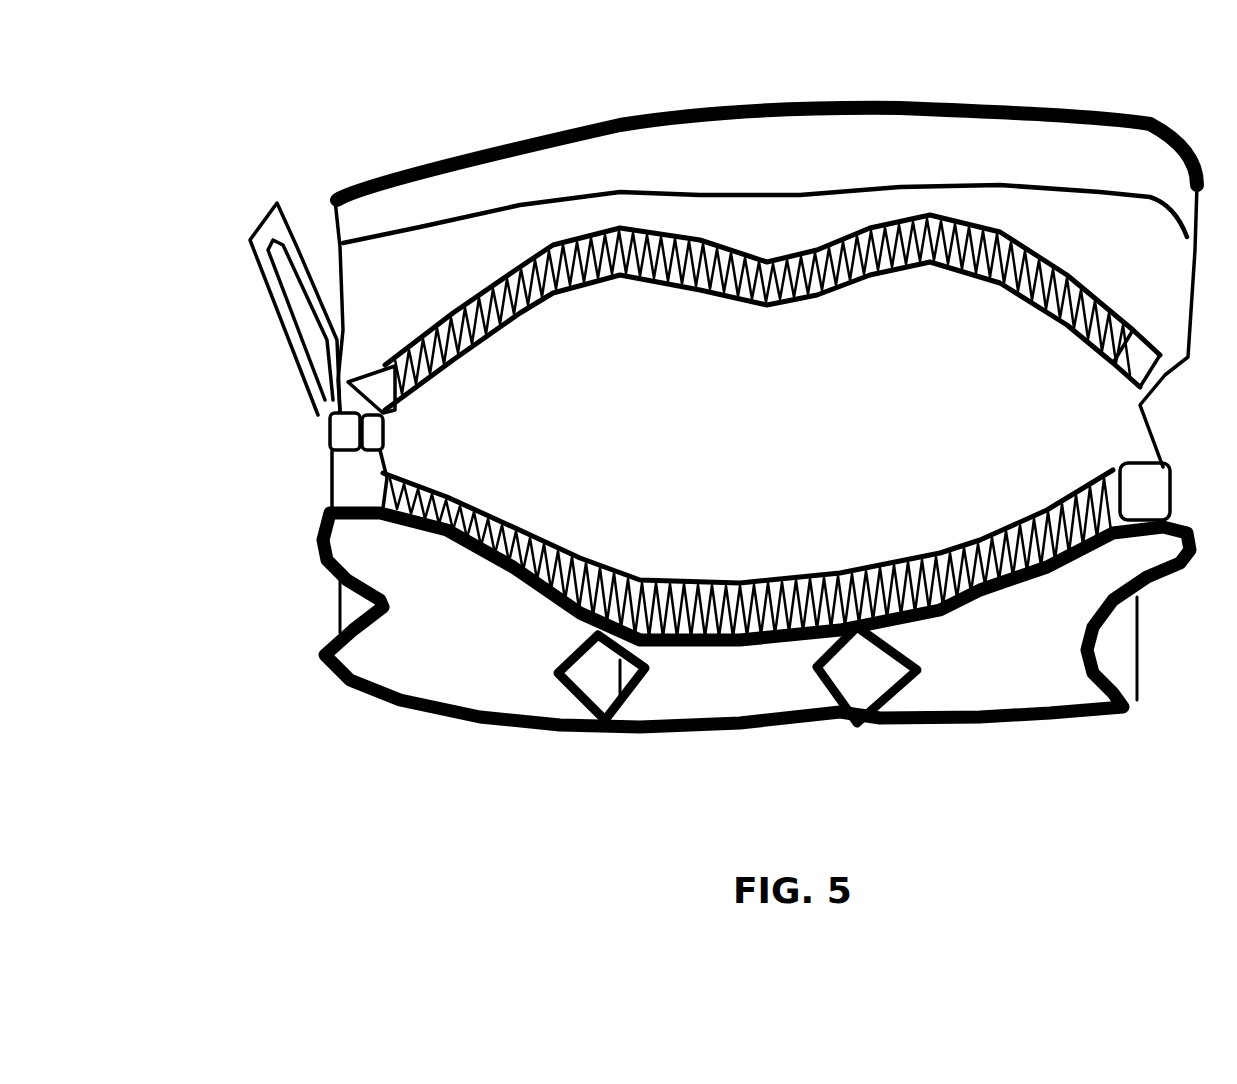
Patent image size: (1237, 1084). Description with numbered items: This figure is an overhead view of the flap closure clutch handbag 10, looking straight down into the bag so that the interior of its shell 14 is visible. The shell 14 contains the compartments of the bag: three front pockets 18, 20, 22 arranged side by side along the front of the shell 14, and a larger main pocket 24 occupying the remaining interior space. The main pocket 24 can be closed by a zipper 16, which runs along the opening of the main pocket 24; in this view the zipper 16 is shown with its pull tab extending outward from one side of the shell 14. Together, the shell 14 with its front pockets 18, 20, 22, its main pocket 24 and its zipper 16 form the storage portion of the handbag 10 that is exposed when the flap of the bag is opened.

The flap closure clutch handbag 10 is at (280, 540).
The shell 14 is at (1137, 667).
The zipper 16 is at (297, 377).
The front pocket 18 is at (475, 668).
The front pocket 20 is at (758, 697).
The front pocket 22 is at (1018, 671).
The main pocket 24 is at (776, 460).